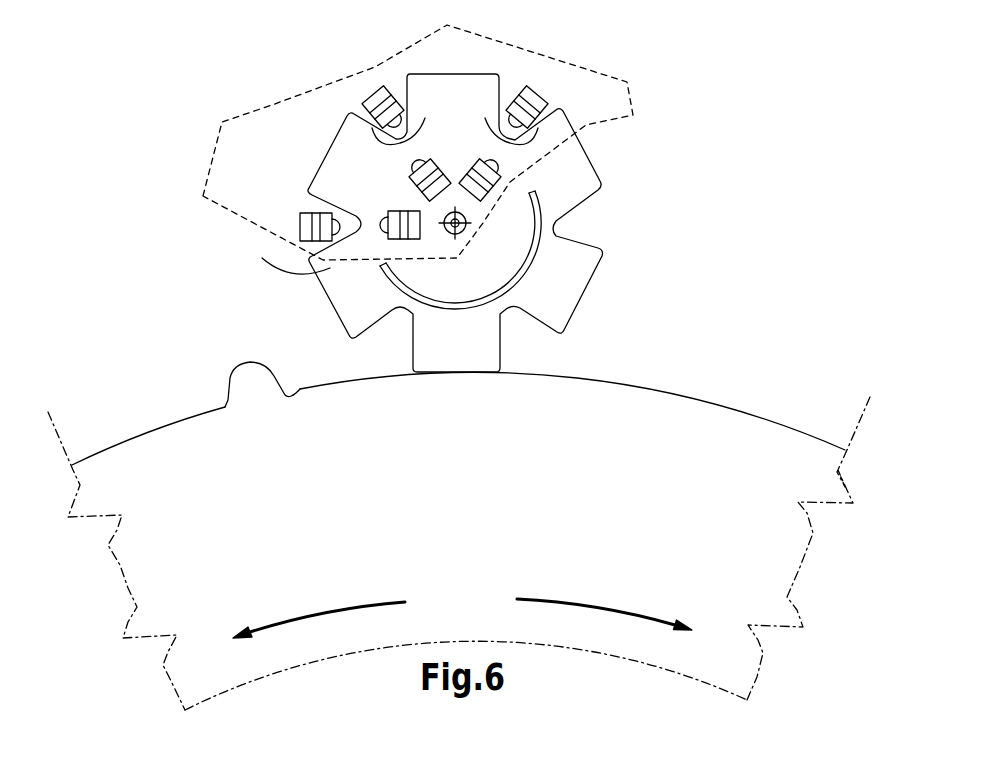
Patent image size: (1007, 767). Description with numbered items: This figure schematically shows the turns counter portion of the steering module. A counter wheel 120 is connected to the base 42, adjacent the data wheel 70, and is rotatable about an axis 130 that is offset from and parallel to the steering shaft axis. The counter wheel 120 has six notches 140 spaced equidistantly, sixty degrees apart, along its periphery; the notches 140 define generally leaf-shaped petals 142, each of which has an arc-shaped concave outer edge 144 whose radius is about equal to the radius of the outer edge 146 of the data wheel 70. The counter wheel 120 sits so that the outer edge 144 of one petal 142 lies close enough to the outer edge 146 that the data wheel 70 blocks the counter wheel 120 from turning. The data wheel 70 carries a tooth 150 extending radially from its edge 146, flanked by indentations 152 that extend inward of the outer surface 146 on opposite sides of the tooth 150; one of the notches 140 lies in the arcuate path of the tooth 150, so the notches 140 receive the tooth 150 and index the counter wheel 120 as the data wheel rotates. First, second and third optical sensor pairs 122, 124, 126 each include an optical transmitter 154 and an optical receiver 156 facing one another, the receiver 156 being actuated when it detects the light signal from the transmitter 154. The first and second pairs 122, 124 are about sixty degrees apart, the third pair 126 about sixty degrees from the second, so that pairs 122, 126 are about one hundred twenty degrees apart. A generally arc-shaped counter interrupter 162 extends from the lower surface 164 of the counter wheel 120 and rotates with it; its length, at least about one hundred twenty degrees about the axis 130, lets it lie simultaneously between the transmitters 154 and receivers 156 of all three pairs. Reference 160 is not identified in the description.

The base 42 is at (275, 127).
The data wheel 70 is at (153, 583).
The counter wheel 120 is at (570, 162).
The first optical sensor pair 122 is at (303, 242).
The second optical sensor pair 124 is at (433, 157).
The third optical sensor pair 126 is at (478, 157).
The axis 130 is at (483, 227).
The notches 140 is at (397, 330).
The petals 142 is at (440, 357).
The outer edge 144 is at (478, 373).
The outer edge 146 is at (137, 437).
The tooth 150 is at (250, 367).
The indentations 152 is at (292, 390).
The optical transmitter 154 is at (370, 88).
The optical receiver 156 is at (388, 212).
The arcuate slot 160 is at (468, 213).
The counter interrupter 162 is at (533, 257).
The lower surface 164 is at (637, 263).